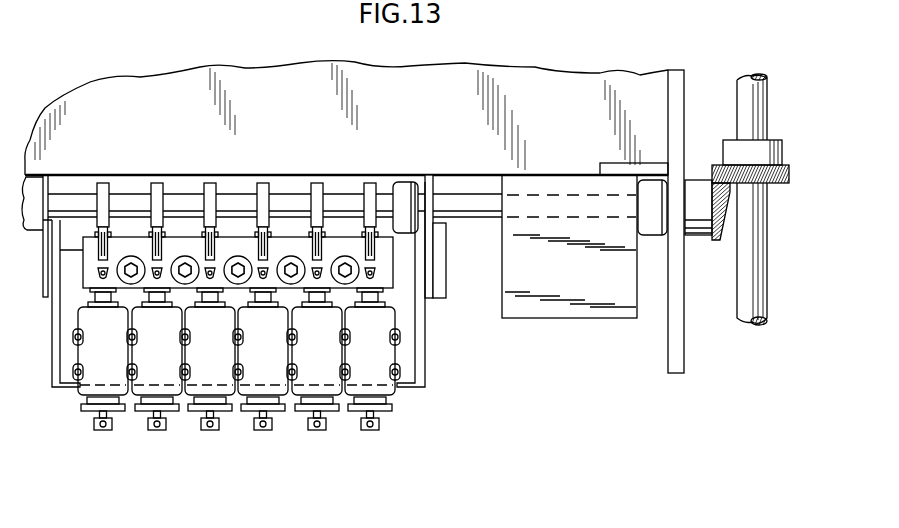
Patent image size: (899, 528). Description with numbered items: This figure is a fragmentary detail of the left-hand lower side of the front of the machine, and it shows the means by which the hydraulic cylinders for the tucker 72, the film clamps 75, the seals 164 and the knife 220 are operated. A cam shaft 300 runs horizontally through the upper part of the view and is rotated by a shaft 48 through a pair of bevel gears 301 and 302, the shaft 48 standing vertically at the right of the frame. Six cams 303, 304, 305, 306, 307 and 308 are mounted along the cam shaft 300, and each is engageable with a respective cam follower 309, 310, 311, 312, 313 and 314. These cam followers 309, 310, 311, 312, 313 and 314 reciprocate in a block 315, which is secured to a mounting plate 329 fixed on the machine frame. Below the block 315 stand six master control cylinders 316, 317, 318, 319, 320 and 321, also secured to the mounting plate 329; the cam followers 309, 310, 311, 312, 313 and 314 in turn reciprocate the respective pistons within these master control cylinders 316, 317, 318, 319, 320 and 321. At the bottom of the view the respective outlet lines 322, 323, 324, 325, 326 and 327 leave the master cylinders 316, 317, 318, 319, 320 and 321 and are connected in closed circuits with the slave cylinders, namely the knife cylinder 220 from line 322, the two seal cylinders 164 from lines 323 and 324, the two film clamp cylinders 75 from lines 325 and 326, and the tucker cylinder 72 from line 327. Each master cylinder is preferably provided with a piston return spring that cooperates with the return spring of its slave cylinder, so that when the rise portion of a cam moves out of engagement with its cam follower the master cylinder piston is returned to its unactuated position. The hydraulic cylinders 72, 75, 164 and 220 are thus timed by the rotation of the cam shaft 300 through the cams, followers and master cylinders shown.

The shaft 48 is at (760, 128).
The hydraulic cylinder 72 is at (105, 390).
The hydraulic cylinder 75 is at (190, 393).
The hydraulic cylinder 164 is at (287, 393).
The hydraulic cylinder 220 is at (371, 388).
The cam shaft 300 is at (475, 203).
The bevel gear 301 is at (782, 172).
The bevel gear 302 is at (717, 243).
The cam 303 is at (370, 176).
The cam 304 is at (317, 176).
The cam 305 is at (263, 176).
The cam 306 is at (209, 176).
The cam 307 is at (156, 176).
The cam 308 is at (100, 176).
The cam follower 309 is at (366, 231).
The cam follower 310 is at (313, 231).
The cam follower 311 is at (262, 231).
The cam follower 312 is at (205, 231).
The cam follower 313 is at (152, 231).
The cam follower 314 is at (98, 231).
The block 315 is at (385, 265).
The master control cylinder 316 is at (356, 337).
The master control cylinder 317 is at (303, 337).
The master control cylinder 318 is at (249, 337).
The master control cylinder 319 is at (196, 337).
The master control cylinder 320 is at (143, 337).
The master control cylinder 321 is at (89, 337).
The outlet line 322 is at (363, 428).
The outlet line 323 is at (310, 428).
The outlet line 324 is at (258, 428).
The outlet line 325 is at (206, 428).
The outlet line 326 is at (149, 428).
The outlet line 327 is at (113, 428).
The mounting plate 329 is at (421, 345).